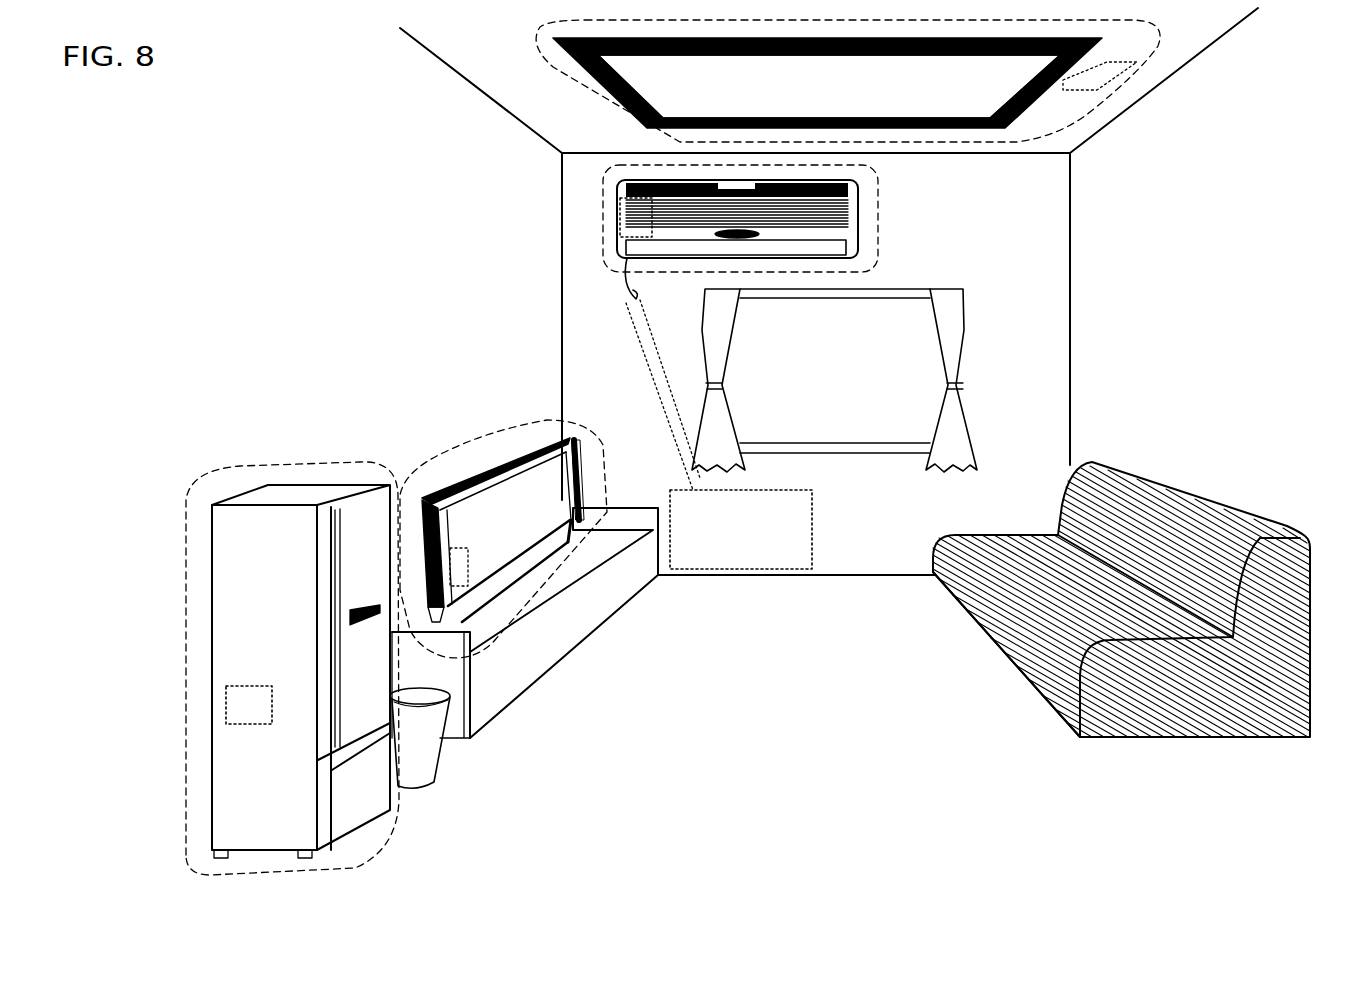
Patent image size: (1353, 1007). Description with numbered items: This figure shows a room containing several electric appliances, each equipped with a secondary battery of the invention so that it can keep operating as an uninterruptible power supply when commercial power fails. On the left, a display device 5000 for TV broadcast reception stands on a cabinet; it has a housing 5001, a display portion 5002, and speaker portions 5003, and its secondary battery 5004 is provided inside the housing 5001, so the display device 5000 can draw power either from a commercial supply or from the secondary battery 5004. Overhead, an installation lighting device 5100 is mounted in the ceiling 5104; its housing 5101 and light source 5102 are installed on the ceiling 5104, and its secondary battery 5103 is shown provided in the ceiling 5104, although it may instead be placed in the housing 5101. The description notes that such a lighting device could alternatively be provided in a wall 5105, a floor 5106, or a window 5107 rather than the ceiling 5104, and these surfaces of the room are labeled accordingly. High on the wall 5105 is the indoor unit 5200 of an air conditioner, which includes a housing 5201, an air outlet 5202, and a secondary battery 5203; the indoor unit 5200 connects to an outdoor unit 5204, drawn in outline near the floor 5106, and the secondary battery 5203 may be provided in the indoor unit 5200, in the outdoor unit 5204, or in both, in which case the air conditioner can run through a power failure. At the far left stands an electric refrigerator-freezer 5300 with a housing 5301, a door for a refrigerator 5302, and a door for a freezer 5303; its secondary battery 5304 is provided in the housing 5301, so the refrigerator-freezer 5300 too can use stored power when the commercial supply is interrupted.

The display device 5000 is at (486, 528).
The housing 5001 is at (540, 485).
The display portion 5002 is at (548, 425).
The speaker portions 5003 is at (570, 450).
The secondary battery 5004 is at (425, 500).
The installation lighting device 5100 is at (762, 92).
The housing 5101 is at (687, 105).
The light source 5102 is at (622, 116).
The secondary battery 5103 is at (1120, 76).
The ceiling 5104 is at (510, 56).
The wall 5105 is at (1156, 186).
The floor 5106 is at (893, 634).
The window 5107 is at (918, 429).
The indoor unit 5200 is at (665, 232).
The housing 5201 is at (620, 212).
The air outlet 5202 is at (637, 250).
The secondary battery 5203 is at (617, 233).
The outdoor unit 5204 is at (735, 524).
The electric refrigerator-freezer 5300 is at (230, 668).
The housing 5301 is at (227, 592).
The door for a refrigerator 5302 is at (357, 670).
The door for a freezer 5303 is at (362, 800).
The secondary battery 5304 is at (227, 703).